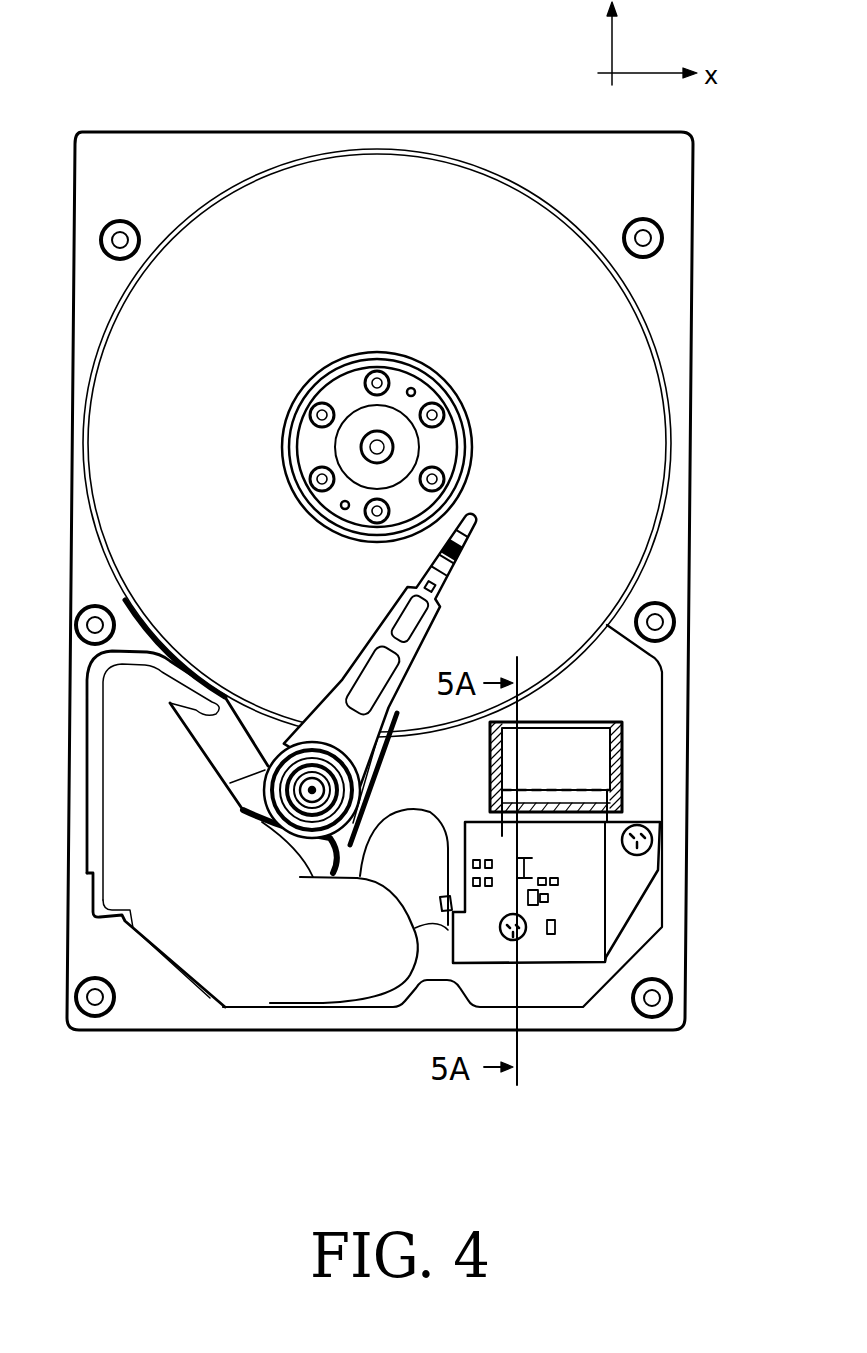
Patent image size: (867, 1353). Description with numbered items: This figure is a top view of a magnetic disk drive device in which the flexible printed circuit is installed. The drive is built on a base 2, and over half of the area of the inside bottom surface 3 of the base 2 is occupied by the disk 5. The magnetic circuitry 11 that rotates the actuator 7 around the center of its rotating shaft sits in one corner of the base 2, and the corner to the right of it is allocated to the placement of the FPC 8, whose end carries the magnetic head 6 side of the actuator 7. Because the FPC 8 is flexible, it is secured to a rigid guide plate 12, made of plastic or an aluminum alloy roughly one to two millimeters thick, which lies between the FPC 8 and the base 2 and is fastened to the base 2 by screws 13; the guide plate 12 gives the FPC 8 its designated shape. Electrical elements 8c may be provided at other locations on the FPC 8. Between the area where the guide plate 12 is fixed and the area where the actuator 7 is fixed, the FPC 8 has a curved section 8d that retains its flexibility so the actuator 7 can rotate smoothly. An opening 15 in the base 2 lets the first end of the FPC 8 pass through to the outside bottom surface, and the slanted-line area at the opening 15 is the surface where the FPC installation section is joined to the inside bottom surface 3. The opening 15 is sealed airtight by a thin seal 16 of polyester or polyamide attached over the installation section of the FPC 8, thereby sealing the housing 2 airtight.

The base 2 is at (693, 267).
The inside bottom surface 3 is at (433, 780).
The disk 5 is at (382, 167).
The magnetic head 6 is at (478, 522).
The actuator 7 is at (367, 655).
The FPC 8 is at (478, 937).
The electrical elements 8c is at (550, 902).
The curved section 8d is at (402, 812).
The magnetic circuitry 11 is at (185, 933).
The guide plate 12 is at (417, 938).
The screws 13 is at (650, 832).
The opening 15 is at (553, 790).
The airtight seal 16 is at (547, 740).